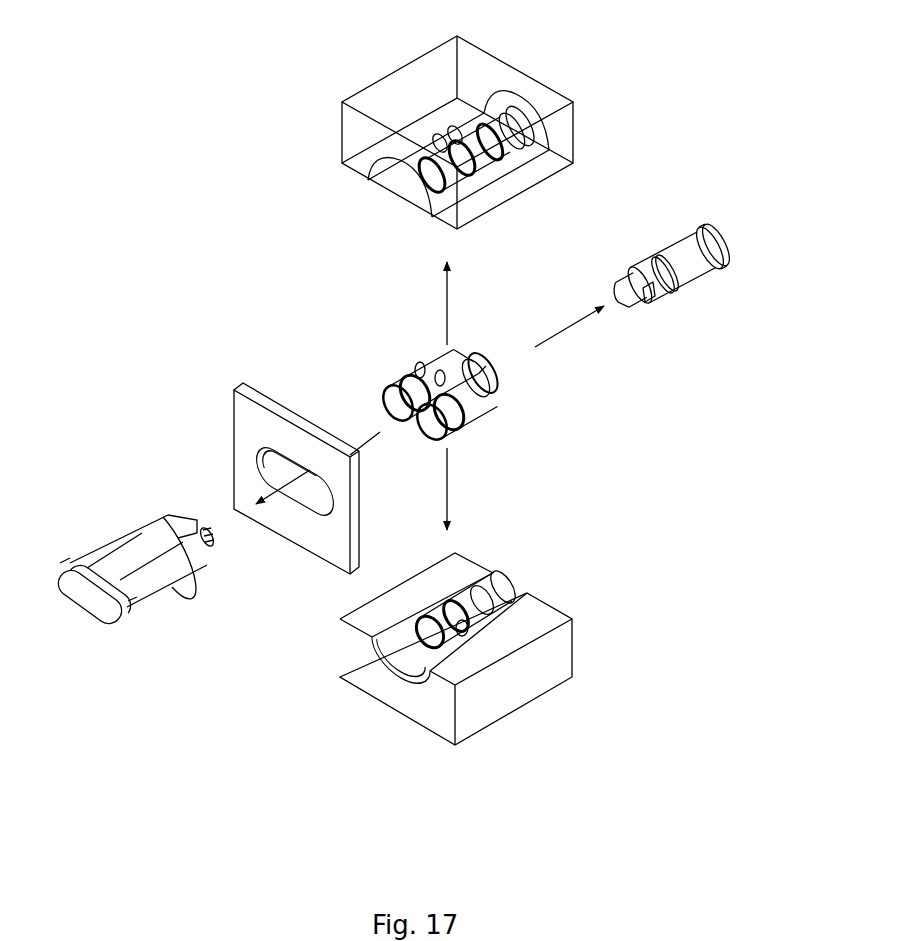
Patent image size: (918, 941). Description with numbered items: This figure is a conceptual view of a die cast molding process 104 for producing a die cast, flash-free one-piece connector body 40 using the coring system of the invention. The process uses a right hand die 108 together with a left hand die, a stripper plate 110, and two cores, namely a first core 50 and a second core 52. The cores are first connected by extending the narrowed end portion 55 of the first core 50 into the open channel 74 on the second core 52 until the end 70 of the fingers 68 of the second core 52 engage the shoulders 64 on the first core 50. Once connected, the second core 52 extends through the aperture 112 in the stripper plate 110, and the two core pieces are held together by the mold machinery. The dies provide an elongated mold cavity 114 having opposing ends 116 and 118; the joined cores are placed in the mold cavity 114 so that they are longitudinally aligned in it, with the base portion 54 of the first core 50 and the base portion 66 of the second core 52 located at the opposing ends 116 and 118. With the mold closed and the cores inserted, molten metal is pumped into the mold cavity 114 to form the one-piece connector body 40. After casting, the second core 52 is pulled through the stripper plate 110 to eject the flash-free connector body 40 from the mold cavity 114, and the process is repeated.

The die cast molding process 104 is at (192, 220).
The right hand die 108 is at (503, 80).
The stripper plate 110 is at (264, 393).
The aperture 112 is at (268, 462).
The mold cavity 114 is at (416, 615).
The opposing end 116 is at (373, 657).
The opposing end 118 is at (500, 593).
The one-piece connector body 40 is at (467, 427).
The first core 50 is at (688, 283).
The second core 52 is at (153, 602).
The base portion 54 is at (689, 247).
The narrowed end portion 55 is at (625, 275).
The shoulders 64 is at (650, 292).
The base portion 66 is at (115, 563).
The fingers 68 is at (155, 535).
The end 70 is at (198, 522).
The open channel 74 is at (180, 520).